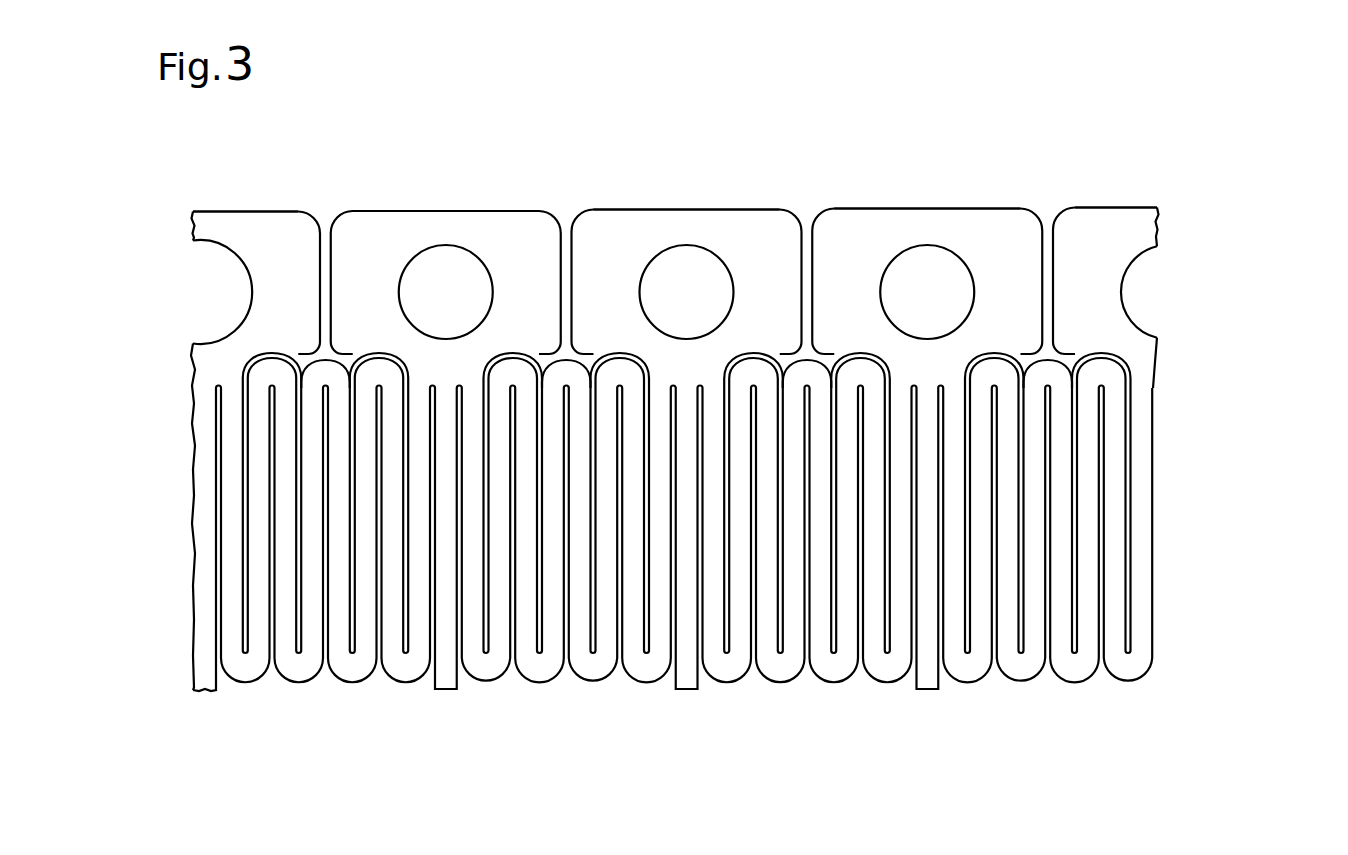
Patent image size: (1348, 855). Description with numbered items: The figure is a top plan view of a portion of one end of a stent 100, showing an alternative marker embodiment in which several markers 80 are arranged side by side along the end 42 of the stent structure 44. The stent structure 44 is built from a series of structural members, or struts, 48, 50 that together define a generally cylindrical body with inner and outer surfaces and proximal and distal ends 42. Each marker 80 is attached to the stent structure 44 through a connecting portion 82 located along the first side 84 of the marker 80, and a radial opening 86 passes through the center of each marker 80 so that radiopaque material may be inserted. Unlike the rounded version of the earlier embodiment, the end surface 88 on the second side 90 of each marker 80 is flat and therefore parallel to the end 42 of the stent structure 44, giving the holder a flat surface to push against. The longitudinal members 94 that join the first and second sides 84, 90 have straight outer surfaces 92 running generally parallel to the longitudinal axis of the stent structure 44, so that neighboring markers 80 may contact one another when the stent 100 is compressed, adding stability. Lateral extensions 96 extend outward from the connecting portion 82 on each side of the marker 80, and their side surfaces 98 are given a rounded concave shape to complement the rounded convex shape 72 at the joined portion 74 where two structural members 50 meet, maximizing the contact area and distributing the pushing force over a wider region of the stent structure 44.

The stent 100 is at (152, 170).
The end of the stent structure 42 is at (178, 381).
The stent structure 44 is at (197, 452).
The structural member 48 is at (225, 491).
The structural member 50 is at (277, 533).
The rounded convex shape 72 is at (378, 365).
The joined portion 74 is at (268, 382).
The marker 80 is at (313, 213).
The connecting portion 82 is at (210, 356).
The first side of the marker 84 is at (178, 358).
The radial opening 86 is at (210, 282).
The flat end surface 88 is at (224, 207).
The second side of the marker 90 is at (176, 223).
The outer surface of the longitudinal member 92 is at (318, 283).
The longitudinal member 94 is at (270, 283).
The lateral extension 96 is at (290, 341).
The rounded concave side surface 98 is at (267, 351).